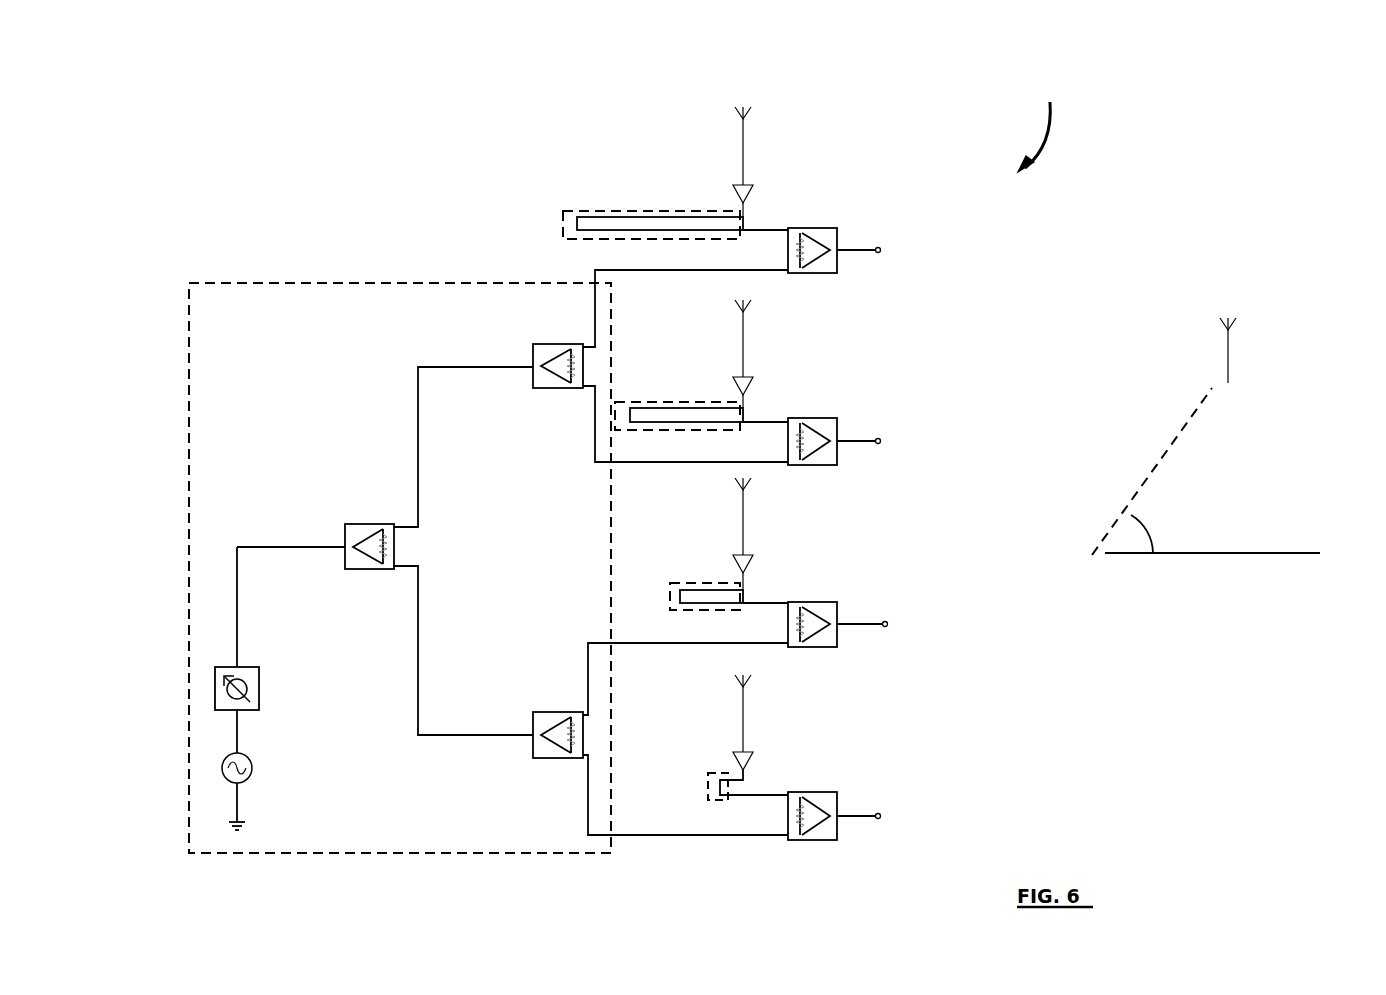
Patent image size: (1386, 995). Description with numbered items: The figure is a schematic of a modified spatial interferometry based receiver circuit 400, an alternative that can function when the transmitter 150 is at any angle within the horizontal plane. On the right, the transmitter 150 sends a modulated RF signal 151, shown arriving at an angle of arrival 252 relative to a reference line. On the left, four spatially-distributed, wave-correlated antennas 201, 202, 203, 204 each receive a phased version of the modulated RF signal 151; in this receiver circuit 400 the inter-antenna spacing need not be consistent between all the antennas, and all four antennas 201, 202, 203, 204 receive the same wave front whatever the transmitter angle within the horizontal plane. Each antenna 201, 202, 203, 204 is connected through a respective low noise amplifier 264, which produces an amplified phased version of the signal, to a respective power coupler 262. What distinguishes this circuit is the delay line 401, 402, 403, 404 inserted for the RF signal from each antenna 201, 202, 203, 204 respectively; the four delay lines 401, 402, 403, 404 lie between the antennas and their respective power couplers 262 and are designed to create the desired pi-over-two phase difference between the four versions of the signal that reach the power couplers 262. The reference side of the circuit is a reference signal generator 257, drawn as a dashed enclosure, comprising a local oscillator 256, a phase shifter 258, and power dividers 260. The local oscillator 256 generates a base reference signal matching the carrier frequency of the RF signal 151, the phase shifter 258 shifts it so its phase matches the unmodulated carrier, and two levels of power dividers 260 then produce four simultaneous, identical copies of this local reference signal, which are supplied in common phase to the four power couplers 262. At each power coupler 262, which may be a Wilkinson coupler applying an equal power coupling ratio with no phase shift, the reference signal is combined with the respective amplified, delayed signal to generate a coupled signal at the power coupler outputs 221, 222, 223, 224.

The receiver circuit 400 is at (1049, 126).
The reference signal generator 257 is at (302, 283).
The power dividers 260 is at (552, 344).
The phase shifter 258 is at (260, 690).
The local oscillator 256 is at (252, 768).
The antenna 204 is at (743, 155).
The antenna 203 is at (743, 347).
The antenna 202 is at (743, 525).
The antenna 201 is at (743, 720).
The low noise amplifier 264 is at (750, 190).
The delay line 404 is at (570, 211).
The delay line 403 is at (647, 402).
The delay line 402 is at (672, 583).
The delay line 401 is at (707, 773).
The power coupler 262 is at (820, 228).
The power coupler output 224 is at (880, 248).
The power coupler output 223 is at (880, 439).
The power coupler output 222 is at (887, 622).
The power coupler output 221 is at (880, 814).
The transmitter 150 is at (1228, 358).
The modulated RF signal 151 is at (1152, 471).
The angle of arrival 252 is at (1195, 520).